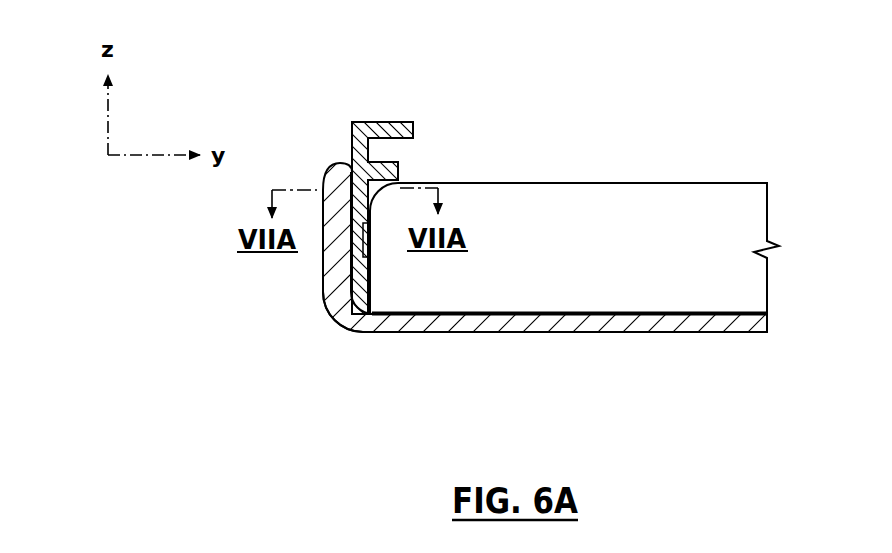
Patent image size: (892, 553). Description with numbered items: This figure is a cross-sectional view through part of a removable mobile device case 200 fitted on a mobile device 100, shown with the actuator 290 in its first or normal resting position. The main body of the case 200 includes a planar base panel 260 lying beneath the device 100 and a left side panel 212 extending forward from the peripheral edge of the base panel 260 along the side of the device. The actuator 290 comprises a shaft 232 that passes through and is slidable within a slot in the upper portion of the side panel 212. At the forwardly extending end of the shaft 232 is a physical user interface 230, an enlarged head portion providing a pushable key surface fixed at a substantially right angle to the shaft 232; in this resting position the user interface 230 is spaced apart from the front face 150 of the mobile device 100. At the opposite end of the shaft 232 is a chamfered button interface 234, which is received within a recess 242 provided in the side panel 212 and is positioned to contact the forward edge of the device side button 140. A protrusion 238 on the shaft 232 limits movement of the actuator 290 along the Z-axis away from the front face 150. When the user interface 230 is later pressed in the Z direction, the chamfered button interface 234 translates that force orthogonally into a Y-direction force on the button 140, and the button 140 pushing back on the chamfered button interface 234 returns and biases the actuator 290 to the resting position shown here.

The mobile device 100 is at (578, 212).
The front face 150 is at (658, 183).
The mobile device case 200 is at (432, 333).
The left side panel 212 is at (322, 252).
The recess 242 is at (323, 273).
The button 140 is at (355, 322).
The physical user interface 230 is at (378, 122).
The shaft 232 is at (368, 148).
The protrusion 238 is at (398, 172).
The actuator 290 is at (352, 137).
The base panel 260 is at (597, 322).
The chamfered button interface 234 is at (370, 256).